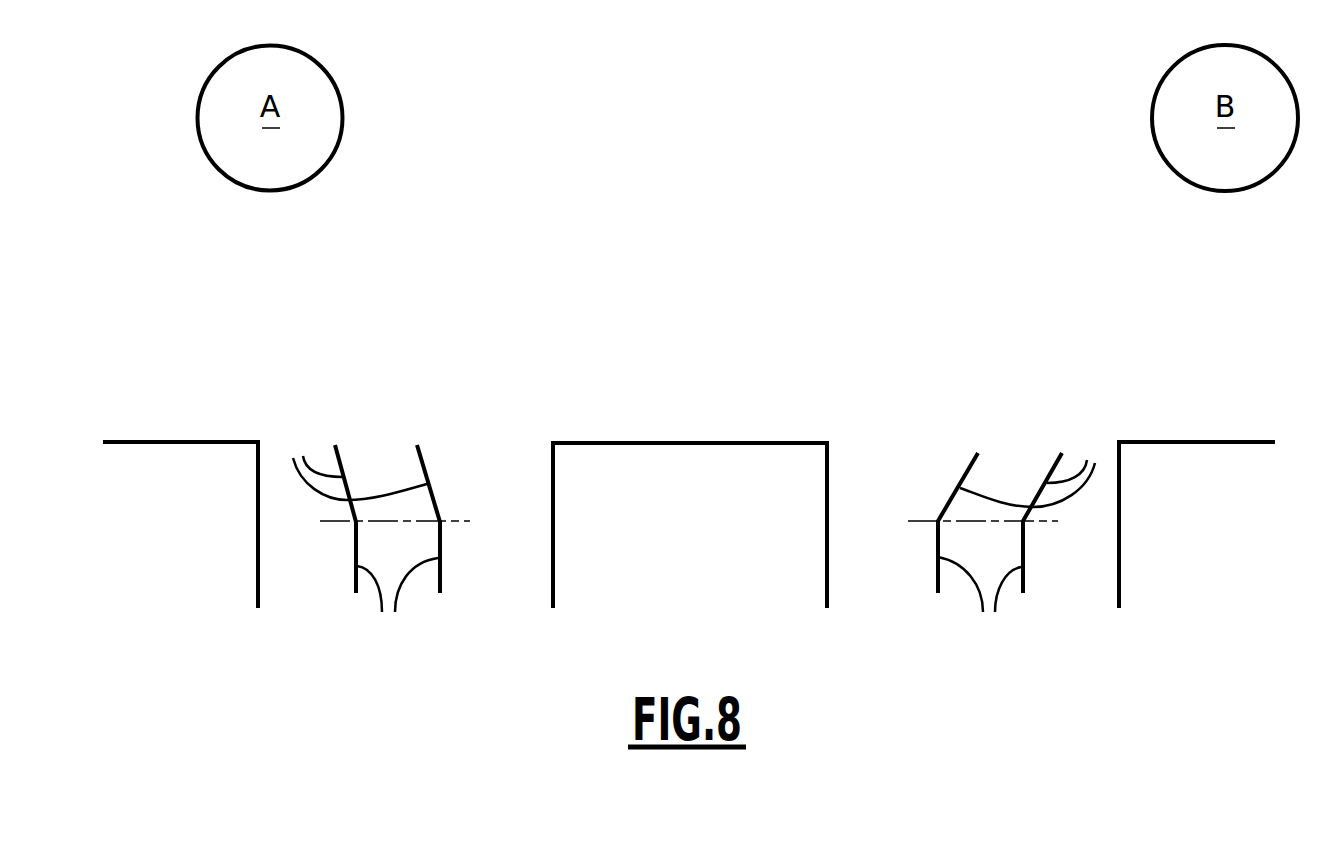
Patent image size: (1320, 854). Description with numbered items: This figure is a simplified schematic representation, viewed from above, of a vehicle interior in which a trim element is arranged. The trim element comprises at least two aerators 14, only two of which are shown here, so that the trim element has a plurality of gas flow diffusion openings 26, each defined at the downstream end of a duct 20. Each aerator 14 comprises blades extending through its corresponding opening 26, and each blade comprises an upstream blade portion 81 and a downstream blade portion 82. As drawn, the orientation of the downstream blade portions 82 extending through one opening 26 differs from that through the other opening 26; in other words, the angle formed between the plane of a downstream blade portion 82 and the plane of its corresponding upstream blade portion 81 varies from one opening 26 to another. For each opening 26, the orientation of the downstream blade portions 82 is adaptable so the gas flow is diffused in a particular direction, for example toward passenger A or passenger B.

The aerator 14 is at (247, 599).
The duct 20 is at (553, 504).
The gas flow diffusion opening 26 is at (498, 433).
The upstream blade portion 81 is at (691, 548).
The downstream blade portion 82 is at (694, 465).